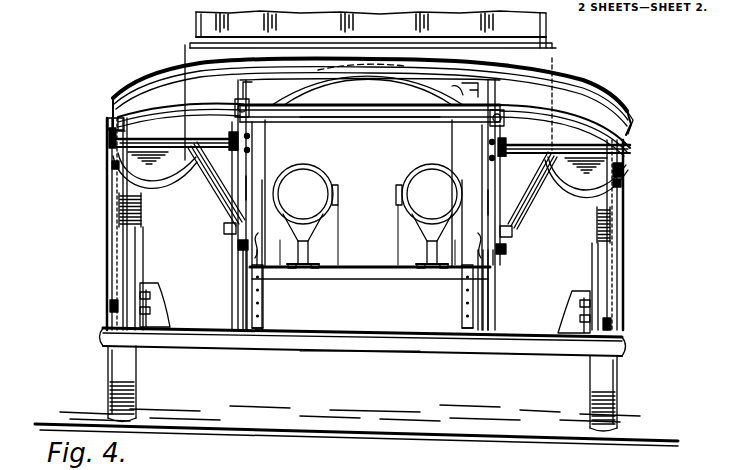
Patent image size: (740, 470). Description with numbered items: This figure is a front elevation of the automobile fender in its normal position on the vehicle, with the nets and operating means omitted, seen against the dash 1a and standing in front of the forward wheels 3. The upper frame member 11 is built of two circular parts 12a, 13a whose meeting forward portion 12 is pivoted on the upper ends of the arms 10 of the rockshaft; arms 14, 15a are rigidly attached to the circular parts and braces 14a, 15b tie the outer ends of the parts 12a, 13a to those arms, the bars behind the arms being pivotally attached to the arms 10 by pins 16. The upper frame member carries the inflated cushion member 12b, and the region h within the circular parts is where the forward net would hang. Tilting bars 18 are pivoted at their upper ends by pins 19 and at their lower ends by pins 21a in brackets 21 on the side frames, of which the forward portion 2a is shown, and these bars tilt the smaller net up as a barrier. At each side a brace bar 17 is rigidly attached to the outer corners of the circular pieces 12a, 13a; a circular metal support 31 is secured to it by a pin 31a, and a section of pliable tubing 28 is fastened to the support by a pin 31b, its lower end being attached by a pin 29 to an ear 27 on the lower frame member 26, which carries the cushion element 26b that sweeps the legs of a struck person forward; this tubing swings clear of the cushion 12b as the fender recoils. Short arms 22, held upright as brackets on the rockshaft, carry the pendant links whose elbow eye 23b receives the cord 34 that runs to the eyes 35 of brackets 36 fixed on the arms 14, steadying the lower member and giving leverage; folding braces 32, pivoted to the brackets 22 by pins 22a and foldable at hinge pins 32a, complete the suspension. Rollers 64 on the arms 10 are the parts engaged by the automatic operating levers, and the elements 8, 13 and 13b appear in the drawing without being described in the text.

The dash 1a is at (547, 51).
The upper frame member 11 is at (121, 97).
The roof rail 13 is at (587, 75).
The circular part 13a is at (394, 84).
The roof rail end 13b is at (627, 100).
The arm 15a is at (245, 88).
The brace 15b is at (185, 104).
The forward portion of the upper frame member 12 is at (406, 122).
The circular part 12a is at (178, 108).
The cushion member 12b is at (360, 122).
The height dimension h is at (458, 95).
The pin 19 is at (238, 104).
The brace bar 17 is at (112, 128).
The arm 14 is at (234, 132).
The brace 14a is at (229, 149).
The pin 16 is at (226, 140).
The bracket 36 is at (370, 144).
The eye 35 is at (370, 156).
The tilting bar 18 is at (266, 175).
The cord 34 is at (243, 198).
The arm 10 is at (236, 182).
The circular metal support 31 is at (108, 158).
The pin 31a is at (109, 134).
The pin 31b is at (110, 167).
The pliable tubing 28 is at (107, 239).
The ear 27 is at (108, 313).
The roller 64 is at (224, 231).
The eye 23b is at (238, 247).
The pin 22a is at (243, 268).
The short arm 22 is at (243, 286).
The hinge pin 32a is at (247, 297).
The folding brace 32 is at (245, 310).
The bracket 21 is at (257, 244).
The pin 21a is at (304, 250).
The forward portion of the side frame 2a is at (264, 291).
The plate foot 8 is at (264, 311).
The pin 29 is at (106, 329).
The lower frame member 26 is at (366, 354).
The cushion element 26b is at (430, 355).
The forward wheel 3 is at (106, 361).